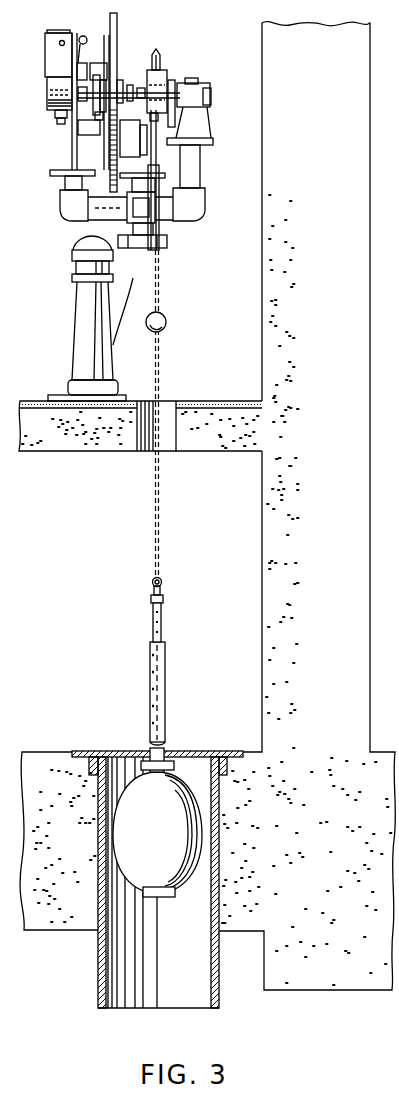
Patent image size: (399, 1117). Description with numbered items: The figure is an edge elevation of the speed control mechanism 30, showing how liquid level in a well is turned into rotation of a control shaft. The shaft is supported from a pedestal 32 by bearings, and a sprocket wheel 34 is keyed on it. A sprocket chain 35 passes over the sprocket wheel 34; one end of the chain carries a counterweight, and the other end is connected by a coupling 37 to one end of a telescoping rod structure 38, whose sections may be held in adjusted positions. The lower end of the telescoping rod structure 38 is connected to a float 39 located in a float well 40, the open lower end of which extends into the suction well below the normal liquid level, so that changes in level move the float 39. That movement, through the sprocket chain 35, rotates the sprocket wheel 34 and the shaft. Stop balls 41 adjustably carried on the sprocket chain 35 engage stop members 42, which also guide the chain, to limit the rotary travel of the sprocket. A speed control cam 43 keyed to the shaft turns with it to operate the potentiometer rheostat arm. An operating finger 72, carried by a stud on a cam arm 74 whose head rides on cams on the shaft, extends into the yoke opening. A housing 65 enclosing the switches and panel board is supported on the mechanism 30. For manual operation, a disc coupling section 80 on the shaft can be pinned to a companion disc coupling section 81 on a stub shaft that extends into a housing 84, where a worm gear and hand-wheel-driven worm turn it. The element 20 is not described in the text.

The valve disc 20 is at (158, 86).
The control mechanism 30 is at (197, 215).
The pedestal 32 is at (108, 355).
The sprocket wheel 34 is at (158, 57).
The sprocket chain 35 is at (156, 531).
The coupling 37 is at (163, 599).
The telescoping rod structure 38 is at (165, 681).
The float 39 is at (183, 798).
The float well 40 is at (217, 924).
The stop ball 41 is at (167, 318).
The stop member 42 is at (160, 170).
The speed control cam 43 is at (118, 62).
The housing 65 is at (58, 58).
The operating finger 72 is at (79, 62).
The cam arm 74 is at (100, 66).
The disc coupling section 80 is at (175, 82).
The companion disc coupling section 81 is at (192, 96).
The housing 84 is at (207, 100).